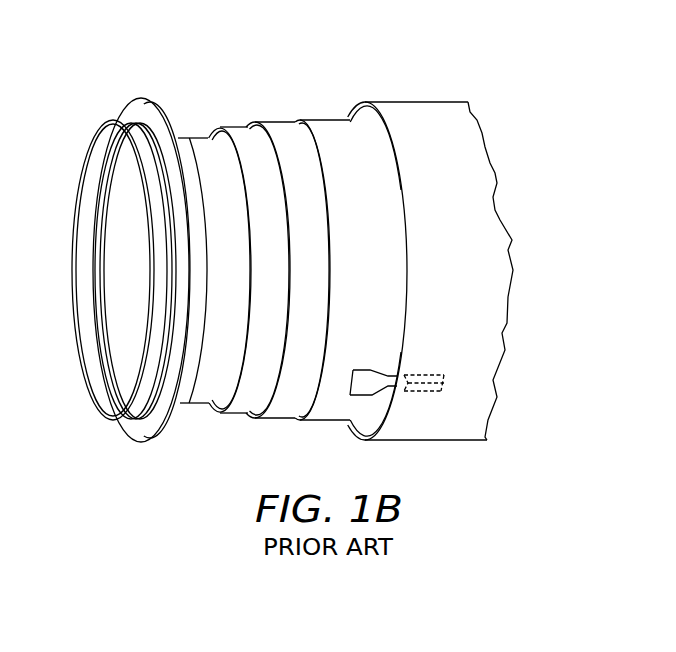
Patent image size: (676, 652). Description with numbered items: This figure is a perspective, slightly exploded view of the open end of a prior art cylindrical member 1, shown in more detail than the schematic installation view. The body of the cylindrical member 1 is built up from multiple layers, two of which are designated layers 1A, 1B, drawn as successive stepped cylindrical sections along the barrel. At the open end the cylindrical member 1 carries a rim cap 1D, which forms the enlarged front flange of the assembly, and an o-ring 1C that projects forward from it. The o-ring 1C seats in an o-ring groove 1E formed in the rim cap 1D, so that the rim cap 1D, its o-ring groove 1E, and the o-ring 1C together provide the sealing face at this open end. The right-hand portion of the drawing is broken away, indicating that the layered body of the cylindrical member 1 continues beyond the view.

The cylindrical member 1 is at (424, 92).
The layer 1A is at (208, 195).
The layer 1B is at (297, 183).
The o-ring 1C is at (95, 132).
The rim cap 1D is at (157, 427).
The o-ring groove 1E is at (136, 118).